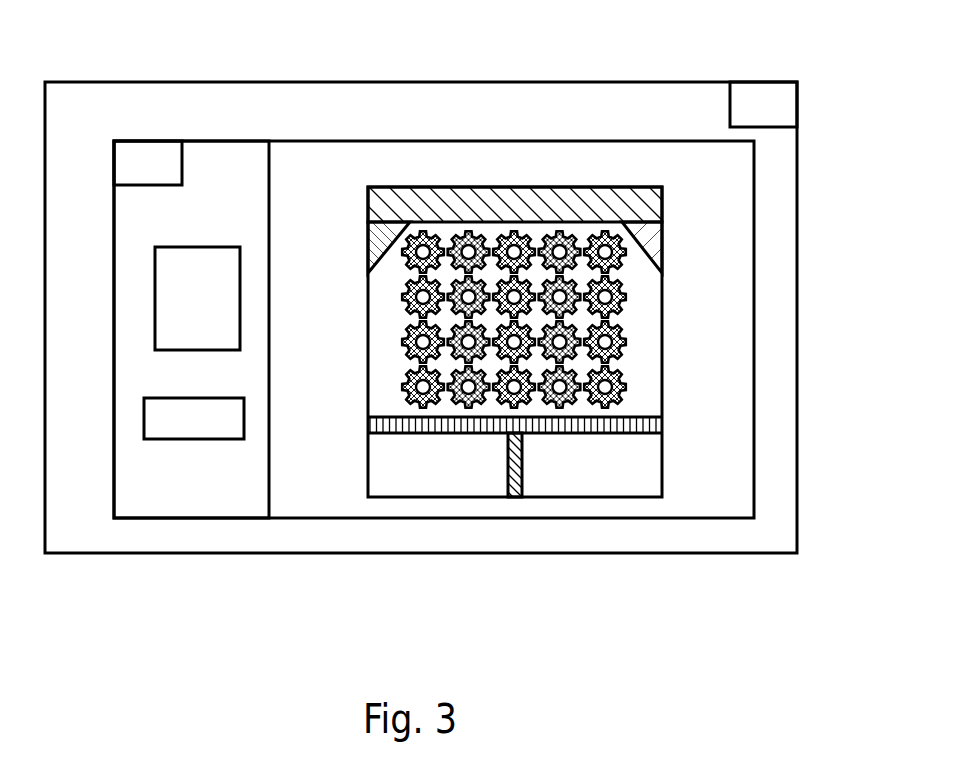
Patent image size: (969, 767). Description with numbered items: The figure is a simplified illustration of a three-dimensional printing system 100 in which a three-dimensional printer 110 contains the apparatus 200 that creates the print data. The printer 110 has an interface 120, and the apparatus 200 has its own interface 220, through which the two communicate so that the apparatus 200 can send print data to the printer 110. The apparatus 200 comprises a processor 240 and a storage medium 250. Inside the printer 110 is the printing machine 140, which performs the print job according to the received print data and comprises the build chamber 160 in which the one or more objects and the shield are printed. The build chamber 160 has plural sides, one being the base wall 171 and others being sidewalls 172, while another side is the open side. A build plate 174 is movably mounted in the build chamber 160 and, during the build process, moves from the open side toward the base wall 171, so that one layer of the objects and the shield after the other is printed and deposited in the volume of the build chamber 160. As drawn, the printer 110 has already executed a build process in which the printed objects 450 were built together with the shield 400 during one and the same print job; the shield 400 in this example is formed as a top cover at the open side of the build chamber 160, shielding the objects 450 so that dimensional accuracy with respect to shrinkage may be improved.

The 3D printing system 100 is at (809, 545).
The 3D printer 110 is at (422, 555).
The interface 120 is at (730, 103).
The 3D printing machine 140 is at (508, 141).
The build chamber 160 is at (662, 357).
The base wall 171 is at (488, 497).
The sidewalls 172 is at (368, 405).
The build plate 174 is at (600, 425).
The apparatus 200 is at (185, 141).
The interface 220 is at (182, 163).
The processor 240 is at (205, 247).
The storage medium 250 is at (194, 440).
The shield 400 is at (518, 187).
The 3D objects 450 is at (403, 297).